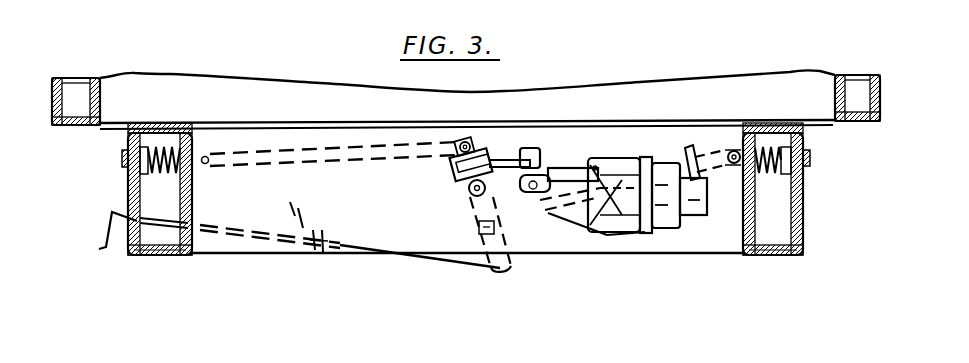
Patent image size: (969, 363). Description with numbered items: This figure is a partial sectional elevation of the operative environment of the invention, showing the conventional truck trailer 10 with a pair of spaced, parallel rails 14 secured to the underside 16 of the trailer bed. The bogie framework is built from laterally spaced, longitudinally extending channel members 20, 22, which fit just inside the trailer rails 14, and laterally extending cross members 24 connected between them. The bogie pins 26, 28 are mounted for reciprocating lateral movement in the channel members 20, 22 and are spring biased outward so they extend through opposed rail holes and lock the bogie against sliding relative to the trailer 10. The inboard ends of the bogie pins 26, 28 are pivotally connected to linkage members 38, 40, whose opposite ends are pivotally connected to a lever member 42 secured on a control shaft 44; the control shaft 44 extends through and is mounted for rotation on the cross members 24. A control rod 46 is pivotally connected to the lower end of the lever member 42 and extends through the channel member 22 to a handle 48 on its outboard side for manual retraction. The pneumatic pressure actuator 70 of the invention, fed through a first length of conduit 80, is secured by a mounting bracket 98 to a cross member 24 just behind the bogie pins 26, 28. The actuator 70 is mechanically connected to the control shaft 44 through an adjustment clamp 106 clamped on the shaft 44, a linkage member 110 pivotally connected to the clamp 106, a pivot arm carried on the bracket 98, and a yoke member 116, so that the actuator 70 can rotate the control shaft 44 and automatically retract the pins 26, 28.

The truck trailer 10 is at (285, 95).
The underside of the trailer bed 16 is at (105, 128).
The rails 14 is at (128, 173).
The channel member 22 is at (147, 257).
The channel member 20 is at (777, 250).
The cross members 24 is at (248, 245).
The bogie pin 28 is at (122, 156).
The bogie pin 26 is at (813, 157).
The handle 48 is at (100, 249).
The linkage member 40 is at (322, 152).
The control rod 46 is at (437, 266).
The lever member 42 is at (495, 277).
The control shaft 44 is at (466, 194).
The adjustment clamp 106 is at (455, 163).
The linkage member 110 is at (507, 152).
The yoke member 116 is at (567, 170).
The linkage member 38 is at (537, 223).
The mounting bracket 98 is at (613, 230).
The pneumatic pressure actuator 70 is at (673, 228).
The first length of conduit 80 is at (689, 147).